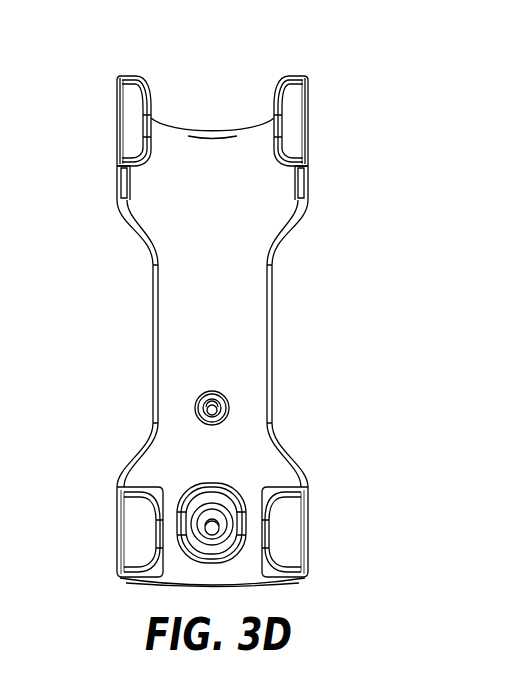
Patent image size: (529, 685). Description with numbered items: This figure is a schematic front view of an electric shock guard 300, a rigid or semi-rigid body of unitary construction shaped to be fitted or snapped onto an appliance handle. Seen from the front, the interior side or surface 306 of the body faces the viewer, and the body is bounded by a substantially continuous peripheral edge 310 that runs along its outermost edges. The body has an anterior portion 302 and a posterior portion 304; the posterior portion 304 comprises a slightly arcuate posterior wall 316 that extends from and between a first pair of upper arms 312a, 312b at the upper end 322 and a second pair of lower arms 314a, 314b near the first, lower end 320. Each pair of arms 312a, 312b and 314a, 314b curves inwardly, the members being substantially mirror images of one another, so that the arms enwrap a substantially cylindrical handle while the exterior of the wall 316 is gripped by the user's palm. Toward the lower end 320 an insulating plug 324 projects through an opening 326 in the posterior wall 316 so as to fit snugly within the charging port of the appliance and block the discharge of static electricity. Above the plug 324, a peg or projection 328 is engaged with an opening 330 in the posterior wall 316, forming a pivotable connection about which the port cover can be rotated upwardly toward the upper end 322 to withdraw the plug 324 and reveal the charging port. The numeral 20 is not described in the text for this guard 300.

The electric shock guard 300 is at (215, 316).
The anterior portion 302 is at (97, 91).
The upper end 322 is at (320, 78).
The first arm 312a is at (127, 122).
The first arm 312b is at (300, 124).
The interior side or surface 306 is at (227, 204).
The posterior portion 304 is at (166, 343).
The peripheral edge 310 is at (152, 303).
The posterior wall 316 is at (263, 330).
The peg or projection 328 is at (212, 392).
The opening 330 is at (212, 425).
The second arm 314a is at (135, 534).
The second arm 314b is at (288, 534).
The first end 320 is at (312, 588).
The plug 324 is at (215, 520).
The opening 326 is at (212, 483).
The device 20 is at (6, 83).